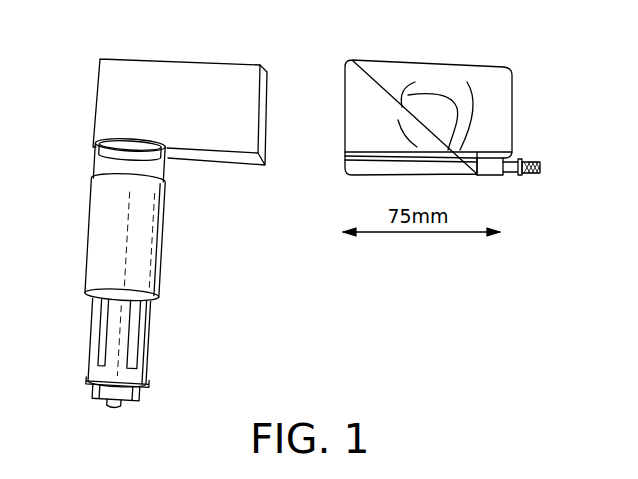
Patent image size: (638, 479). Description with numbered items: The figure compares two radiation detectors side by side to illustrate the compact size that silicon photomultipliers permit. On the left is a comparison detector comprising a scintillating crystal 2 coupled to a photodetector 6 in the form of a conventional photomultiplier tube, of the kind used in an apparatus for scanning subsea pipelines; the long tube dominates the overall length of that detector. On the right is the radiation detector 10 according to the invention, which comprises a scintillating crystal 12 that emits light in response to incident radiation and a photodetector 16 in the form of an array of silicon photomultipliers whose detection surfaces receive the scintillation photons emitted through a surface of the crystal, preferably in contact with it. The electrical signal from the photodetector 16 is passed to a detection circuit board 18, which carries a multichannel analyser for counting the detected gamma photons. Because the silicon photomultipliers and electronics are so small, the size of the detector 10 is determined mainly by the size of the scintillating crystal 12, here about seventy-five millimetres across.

The scintillating crystal 2 is at (108, 104).
The photodetector 6 is at (88, 247).
The radiation detector 10 is at (466, 122).
The scintillating crystal 12 is at (517, 117).
The photodetector 16 is at (473, 182).
The detection circuit board 18 is at (531, 167).